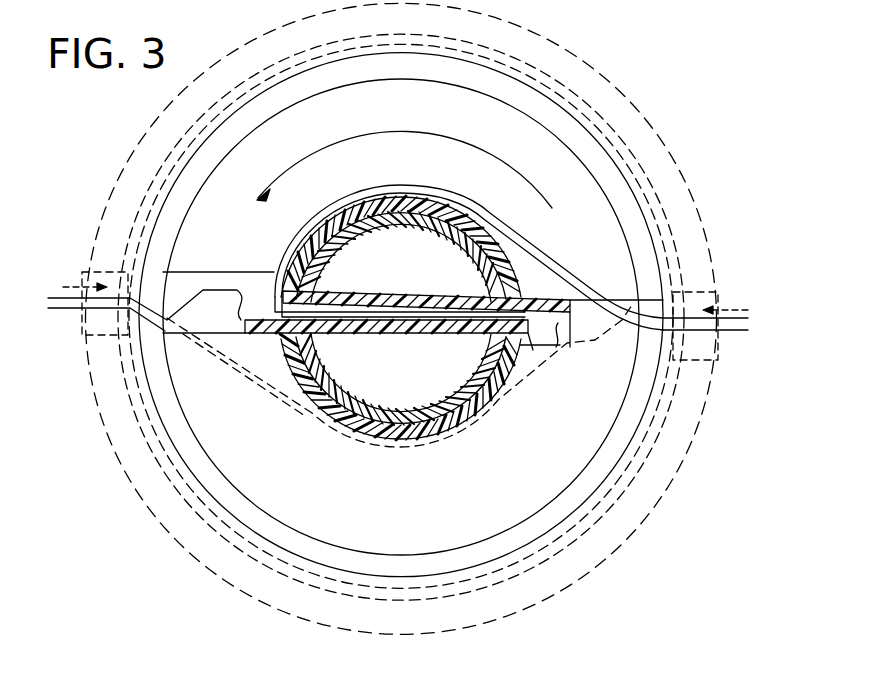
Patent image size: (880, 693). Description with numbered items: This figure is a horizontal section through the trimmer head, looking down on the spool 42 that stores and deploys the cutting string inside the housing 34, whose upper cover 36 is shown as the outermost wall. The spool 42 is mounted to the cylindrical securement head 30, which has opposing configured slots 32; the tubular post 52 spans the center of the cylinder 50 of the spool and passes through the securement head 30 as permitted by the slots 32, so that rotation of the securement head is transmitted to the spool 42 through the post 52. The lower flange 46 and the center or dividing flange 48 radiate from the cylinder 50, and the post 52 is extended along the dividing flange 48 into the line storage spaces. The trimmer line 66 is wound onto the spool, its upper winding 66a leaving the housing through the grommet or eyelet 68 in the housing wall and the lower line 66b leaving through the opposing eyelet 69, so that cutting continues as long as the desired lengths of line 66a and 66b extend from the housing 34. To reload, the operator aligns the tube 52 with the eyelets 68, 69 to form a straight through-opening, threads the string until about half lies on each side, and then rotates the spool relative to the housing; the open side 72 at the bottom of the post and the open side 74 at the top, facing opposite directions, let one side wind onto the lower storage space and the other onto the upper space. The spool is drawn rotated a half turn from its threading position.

The securement head 30 is at (465, 382).
The configured slots 32 is at (500, 285).
The housing 34 is at (152, 168).
The upper cover 36 is at (147, 117).
The spool 42 is at (160, 207).
The lower flange 46 is at (185, 456).
The center or dividing flange 48 is at (200, 400).
The cylinder 50 is at (398, 442).
The tubular post 52 is at (375, 300).
The trimmer line 66 is at (413, 314).
The upper winding of trimmer line 66a is at (52, 290).
The lower line 66b is at (733, 333).
The grommet or eyelet 68 is at (90, 268).
The opposing eyelet 69 is at (710, 268).
The open side of post (bottom) 72 is at (243, 300).
The open side of post (top) 74 is at (553, 348).